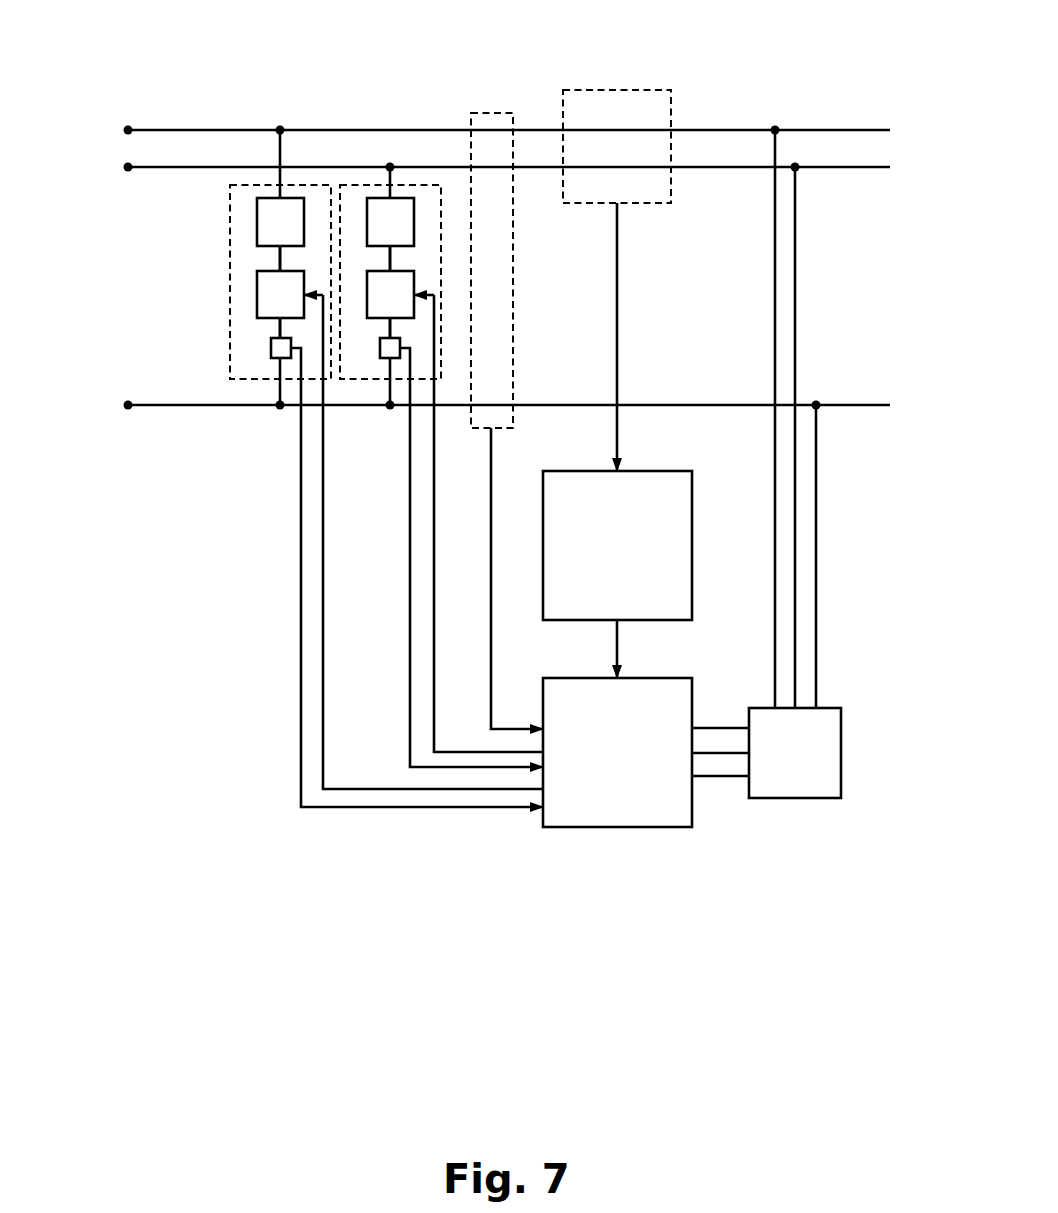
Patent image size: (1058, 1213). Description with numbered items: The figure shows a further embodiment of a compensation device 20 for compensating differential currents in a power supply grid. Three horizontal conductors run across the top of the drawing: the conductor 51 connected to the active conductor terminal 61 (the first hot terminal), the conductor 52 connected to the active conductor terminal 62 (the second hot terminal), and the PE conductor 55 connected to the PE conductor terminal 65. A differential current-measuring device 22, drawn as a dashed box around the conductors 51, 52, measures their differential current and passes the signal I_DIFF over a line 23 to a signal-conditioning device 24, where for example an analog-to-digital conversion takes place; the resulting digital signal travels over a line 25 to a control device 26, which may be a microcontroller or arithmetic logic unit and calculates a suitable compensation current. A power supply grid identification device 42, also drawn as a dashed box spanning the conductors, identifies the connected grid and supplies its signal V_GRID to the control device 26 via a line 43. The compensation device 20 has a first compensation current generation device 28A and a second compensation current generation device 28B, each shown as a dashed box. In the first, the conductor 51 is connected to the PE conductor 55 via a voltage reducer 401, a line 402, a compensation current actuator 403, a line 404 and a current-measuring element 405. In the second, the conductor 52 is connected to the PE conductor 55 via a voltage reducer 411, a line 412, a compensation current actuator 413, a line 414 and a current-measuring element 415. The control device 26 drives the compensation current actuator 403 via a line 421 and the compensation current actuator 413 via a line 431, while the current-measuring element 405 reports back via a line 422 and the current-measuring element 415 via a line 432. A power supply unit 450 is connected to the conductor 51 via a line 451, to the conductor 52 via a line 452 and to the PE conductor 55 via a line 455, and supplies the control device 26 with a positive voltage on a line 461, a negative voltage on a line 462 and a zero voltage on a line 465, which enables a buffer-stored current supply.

The compensation device 20 is at (252, 583).
The differential current-measuring device 22 is at (617, 90).
The line 23 is at (617, 298).
The signal-conditioning device 24 is at (645, 470).
The line 25 is at (617, 650).
The control device 26 is at (692, 695).
The first compensation current generation device 28A is at (242, 237).
The second compensation current generation device 28B is at (465, 237).
The power supply grid identification device 42 is at (487, 113).
The line 43 is at (491, 455).
The conductor 51 is at (873, 128).
The conductor 52 is at (873, 165).
The PE conductor 55 is at (873, 403).
The active conductor terminal 61 is at (130, 127).
The active conductor terminal 62 is at (128, 170).
The PE conductor terminal 65 is at (127, 408).
The voltage reducer 401 is at (258, 222).
The line 402 is at (280, 260).
The compensation current actuator 403 is at (258, 296).
The line 404 is at (280, 328).
The current-measuring element 405 is at (271, 348).
The voltage reducer 411 is at (414, 207).
The line 412 is at (390, 257).
The compensation current actuator 413 is at (414, 282).
The line 414 is at (391, 328).
The current-measuring element 415 is at (400, 350).
The line 421 is at (342, 790).
The line 422 is at (393, 810).
The line 431 is at (462, 755).
The line 432 is at (487, 770).
The power supply unit 450 is at (841, 752).
The line 451 is at (775, 250).
The line 452 is at (795, 297).
The line 455 is at (816, 505).
The line 461 is at (710, 728).
The line 462 is at (718, 753).
The line 465 is at (730, 776).